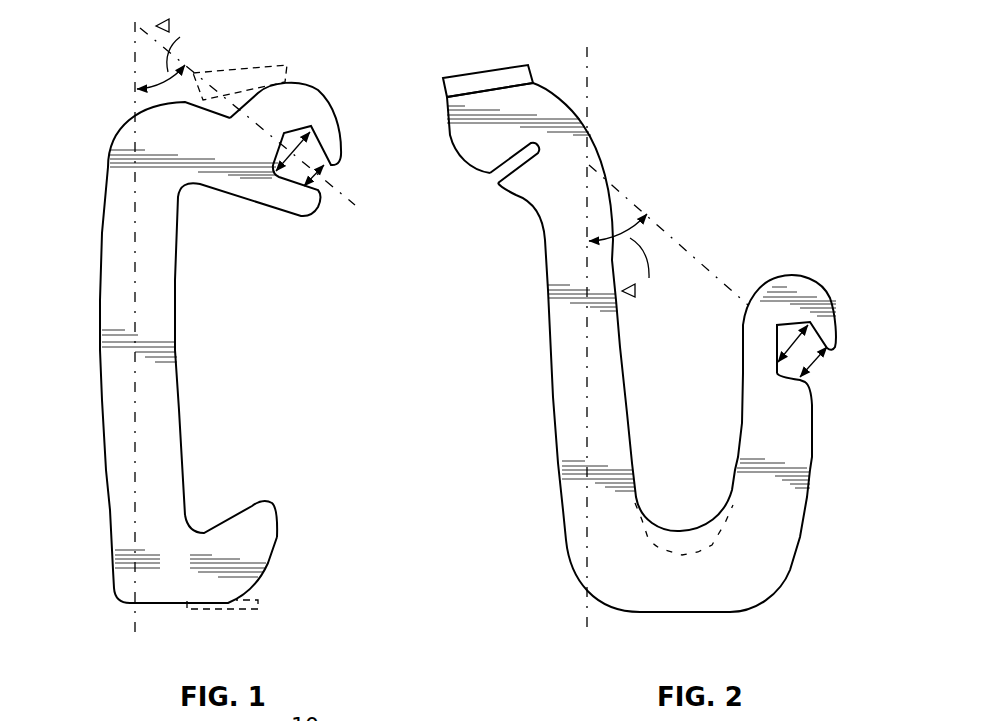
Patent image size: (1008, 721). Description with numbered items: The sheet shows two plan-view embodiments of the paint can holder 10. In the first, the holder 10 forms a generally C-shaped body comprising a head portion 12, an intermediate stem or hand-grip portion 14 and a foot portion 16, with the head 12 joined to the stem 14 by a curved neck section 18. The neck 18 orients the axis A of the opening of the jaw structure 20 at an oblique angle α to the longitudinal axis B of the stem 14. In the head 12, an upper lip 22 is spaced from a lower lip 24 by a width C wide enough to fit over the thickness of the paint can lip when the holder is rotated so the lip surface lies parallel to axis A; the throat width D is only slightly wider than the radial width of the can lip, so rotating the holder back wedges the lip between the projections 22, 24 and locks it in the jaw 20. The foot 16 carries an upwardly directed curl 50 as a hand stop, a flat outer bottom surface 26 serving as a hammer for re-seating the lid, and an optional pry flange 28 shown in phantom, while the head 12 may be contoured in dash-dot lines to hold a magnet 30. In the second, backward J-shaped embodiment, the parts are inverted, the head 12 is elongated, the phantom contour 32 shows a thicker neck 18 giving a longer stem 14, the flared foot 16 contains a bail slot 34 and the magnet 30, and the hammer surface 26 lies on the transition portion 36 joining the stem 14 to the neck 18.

In FIG. 1, the paint can holder 10 is at (125, 47).
In FIG. 2, the paint can holder 10 is at (671, 42).
In FIG. 1, the head portion 12 is at (311, 84).
In FIG. 2, the head portion 12 is at (777, 282).
In FIG. 1, the stem or hand-grip portion 14 is at (102, 403).
In FIG. 2, the stem or hand-grip portion 14 is at (553, 400).
In FIG. 1, the foot portion 16 is at (187, 574).
In FIG. 2, the foot portion 16 is at (602, 157).
In FIG. 1, the curved neck section 18 is at (231, 180).
In FIG. 2, the curved neck section 18 is at (782, 527).
In FIG. 1, the jaw structure 20 is at (331, 196).
In FIG. 2, the jaw structure 20 is at (819, 400).
In FIG. 1, the upper lip 22 is at (322, 124).
In FIG. 2, the upper lip 22 is at (817, 294).
In FIG. 1, the lower lip 24 is at (271, 197).
In FIG. 2, the lower lip 24 is at (790, 384).
In FIG. 1, the outer bottom surface 26 is at (148, 607).
In FIG. 2, the outer bottom surface 26 is at (631, 613).
In FIG. 1, the flange 28 is at (230, 608).
In FIG. 1, the magnet 30 is at (234, 80).
In FIG. 2, the magnet 30 is at (478, 80).
In FIG. 2, the alternative neck contour 32 is at (716, 543).
In FIG. 2, the bail slot 34 is at (496, 182).
In FIG. 1, the transition portion 36 is at (201, 142).
In FIG. 2, the transition portion 36 is at (674, 589).
In FIG. 1, the upwardly directed curl 50 is at (261, 515).
In FIG. 2, the upwardly directed curl 50 is at (553, 203).
In FIG. 1, the axis of the jaw opening A is at (367, 215).
In FIG. 2, the axis of the jaw opening A is at (838, 396).
In FIG. 1, the longitudinal axis of the stem B is at (133, 104).
In FIG. 2, the longitudinal axis of the stem B is at (588, 297).
In FIG. 1, the jaw opening width C is at (329, 164).
In FIG. 2, the jaw opening width C is at (816, 373).
In FIG. 1, the throat width D is at (280, 152).
In FIG. 2, the throat width D is at (777, 340).